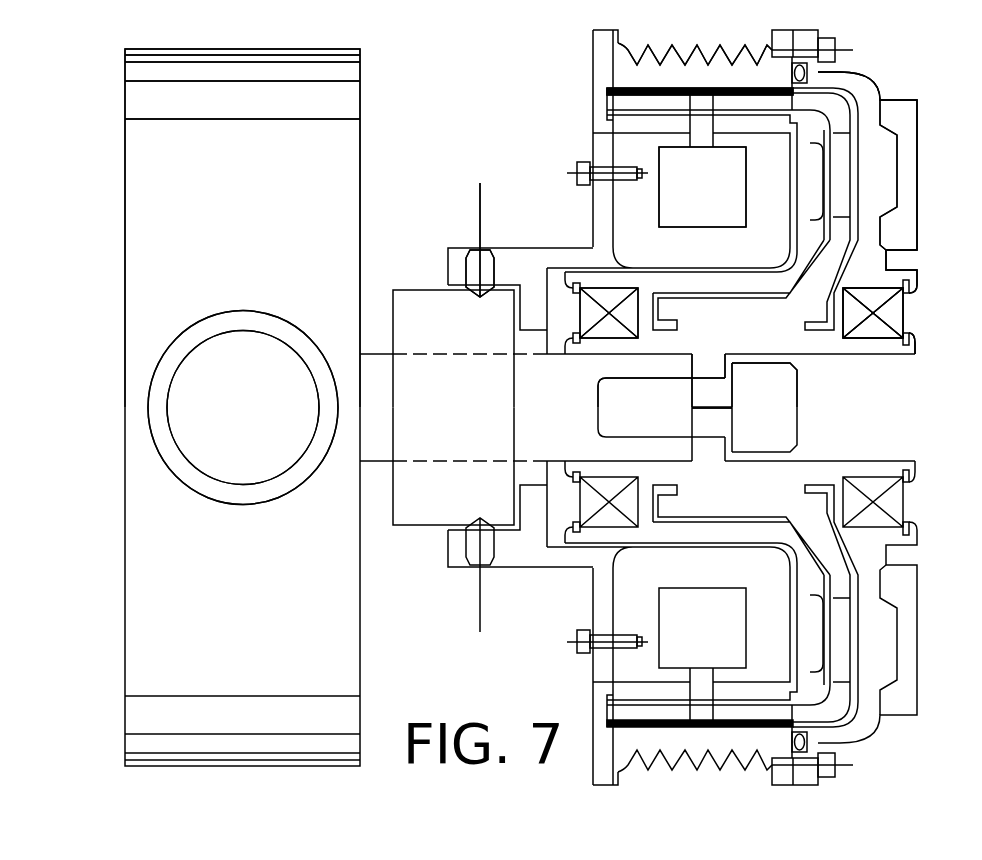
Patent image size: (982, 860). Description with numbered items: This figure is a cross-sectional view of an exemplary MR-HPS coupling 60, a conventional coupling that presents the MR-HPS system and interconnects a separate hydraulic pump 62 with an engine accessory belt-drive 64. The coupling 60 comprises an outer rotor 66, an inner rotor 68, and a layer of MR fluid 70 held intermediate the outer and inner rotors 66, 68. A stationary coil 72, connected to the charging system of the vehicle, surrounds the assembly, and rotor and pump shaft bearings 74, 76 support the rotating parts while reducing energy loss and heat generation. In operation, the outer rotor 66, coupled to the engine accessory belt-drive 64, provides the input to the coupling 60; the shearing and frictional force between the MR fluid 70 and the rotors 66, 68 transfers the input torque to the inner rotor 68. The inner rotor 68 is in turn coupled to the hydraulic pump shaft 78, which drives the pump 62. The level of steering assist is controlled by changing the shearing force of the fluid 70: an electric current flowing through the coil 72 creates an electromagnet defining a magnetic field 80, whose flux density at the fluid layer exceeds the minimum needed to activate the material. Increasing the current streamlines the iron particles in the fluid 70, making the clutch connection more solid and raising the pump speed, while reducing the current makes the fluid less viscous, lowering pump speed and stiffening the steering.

The MR-HPS coupling 60 is at (913, 33).
The hydraulic pump 62 is at (350, 152).
The engine accessory belt-drive 64 is at (931, 175).
The outer rotor 66 is at (652, 70).
The inner rotor 68 is at (758, 102).
The layer of MR fluid 70 is at (642, 88).
The stationary coil 72 is at (673, 192).
The rotor bearing 74 is at (643, 342).
The pump shaft bearing 76 is at (487, 532).
The hydraulic pump shaft 78 is at (580, 427).
The magnetic field 80 is at (912, 395).